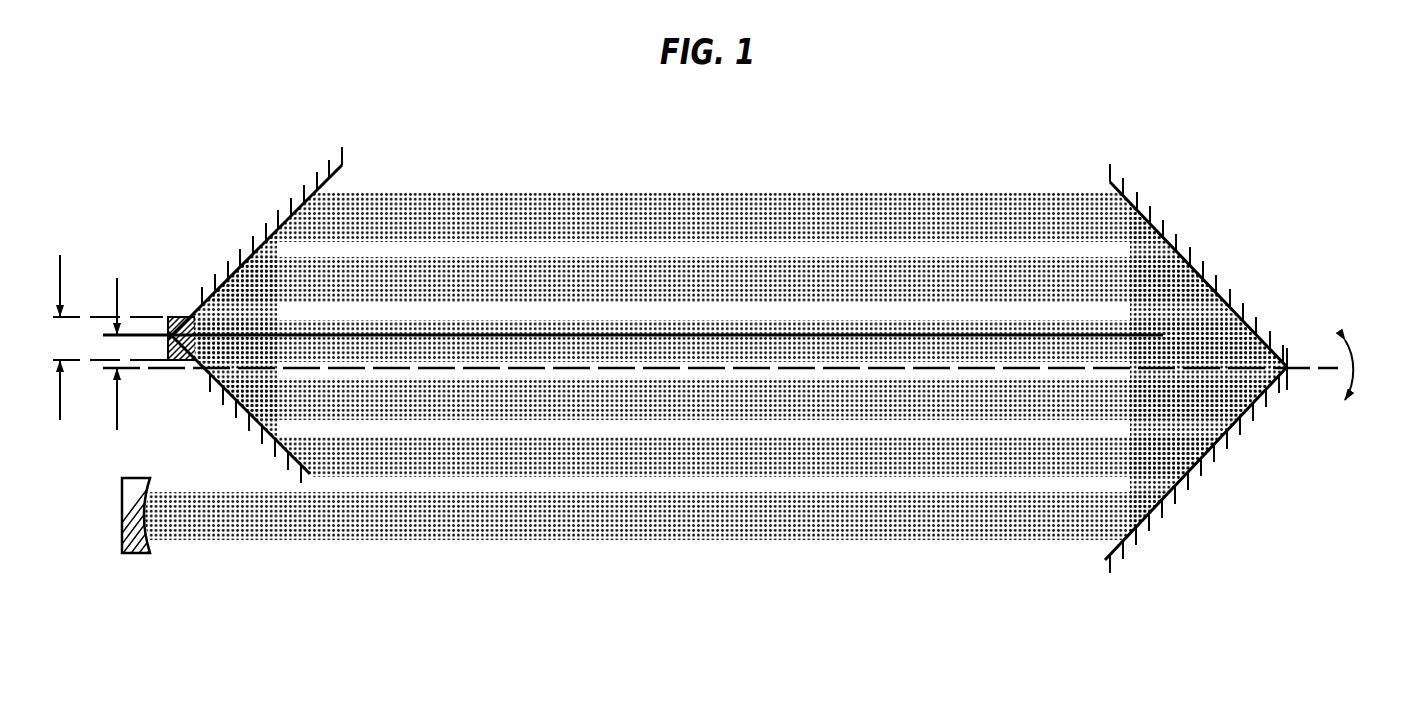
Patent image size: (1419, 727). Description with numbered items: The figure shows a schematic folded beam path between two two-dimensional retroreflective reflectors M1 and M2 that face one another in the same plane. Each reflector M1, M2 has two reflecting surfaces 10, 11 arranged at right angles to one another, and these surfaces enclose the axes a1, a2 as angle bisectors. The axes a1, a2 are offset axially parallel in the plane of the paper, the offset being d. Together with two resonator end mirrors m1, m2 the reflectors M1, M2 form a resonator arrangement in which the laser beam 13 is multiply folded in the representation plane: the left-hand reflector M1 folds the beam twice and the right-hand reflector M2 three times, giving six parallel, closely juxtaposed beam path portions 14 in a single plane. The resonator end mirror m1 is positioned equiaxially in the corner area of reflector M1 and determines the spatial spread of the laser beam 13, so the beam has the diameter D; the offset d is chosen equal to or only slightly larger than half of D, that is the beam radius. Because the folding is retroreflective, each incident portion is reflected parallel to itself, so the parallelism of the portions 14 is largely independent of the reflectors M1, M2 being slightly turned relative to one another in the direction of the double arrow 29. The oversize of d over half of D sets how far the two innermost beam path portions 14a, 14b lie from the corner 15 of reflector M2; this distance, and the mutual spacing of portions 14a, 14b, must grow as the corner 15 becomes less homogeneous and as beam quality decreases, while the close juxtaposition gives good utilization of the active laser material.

The reflecting surface 10 is at (342, 167).
The reflecting surface 11 is at (267, 424).
The laser beam 13 is at (805, 541).
The beam path portions 14 is at (720, 283).
The innermost beam path portion 14a is at (1218, 343).
The innermost beam path portion 14b is at (1232, 393).
The corner 15 is at (1290, 365).
The double arrow 29 is at (1355, 374).
The retroreflective reflector M1 is at (249, 161).
The retroreflective reflector M2 is at (1201, 164).
The resonator end mirror m1 is at (179, 306).
The resonator end mirror m2 is at (152, 538).
The axis a1 is at (355, 335).
The axis a2 is at (477, 372).
The diameter of the laser beam D is at (110, 337).
The offset d is at (133, 354).